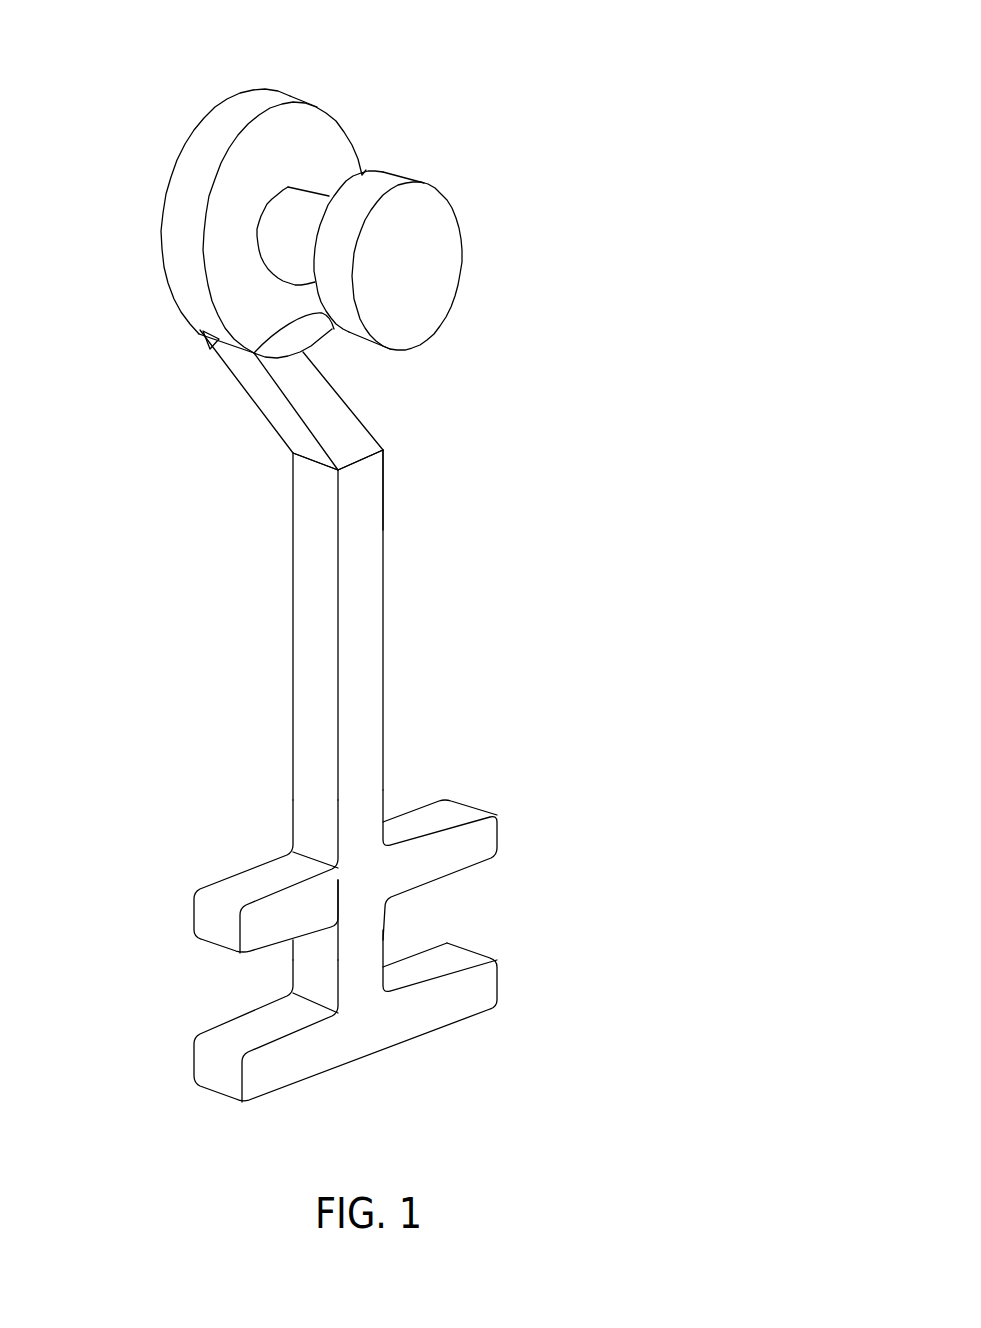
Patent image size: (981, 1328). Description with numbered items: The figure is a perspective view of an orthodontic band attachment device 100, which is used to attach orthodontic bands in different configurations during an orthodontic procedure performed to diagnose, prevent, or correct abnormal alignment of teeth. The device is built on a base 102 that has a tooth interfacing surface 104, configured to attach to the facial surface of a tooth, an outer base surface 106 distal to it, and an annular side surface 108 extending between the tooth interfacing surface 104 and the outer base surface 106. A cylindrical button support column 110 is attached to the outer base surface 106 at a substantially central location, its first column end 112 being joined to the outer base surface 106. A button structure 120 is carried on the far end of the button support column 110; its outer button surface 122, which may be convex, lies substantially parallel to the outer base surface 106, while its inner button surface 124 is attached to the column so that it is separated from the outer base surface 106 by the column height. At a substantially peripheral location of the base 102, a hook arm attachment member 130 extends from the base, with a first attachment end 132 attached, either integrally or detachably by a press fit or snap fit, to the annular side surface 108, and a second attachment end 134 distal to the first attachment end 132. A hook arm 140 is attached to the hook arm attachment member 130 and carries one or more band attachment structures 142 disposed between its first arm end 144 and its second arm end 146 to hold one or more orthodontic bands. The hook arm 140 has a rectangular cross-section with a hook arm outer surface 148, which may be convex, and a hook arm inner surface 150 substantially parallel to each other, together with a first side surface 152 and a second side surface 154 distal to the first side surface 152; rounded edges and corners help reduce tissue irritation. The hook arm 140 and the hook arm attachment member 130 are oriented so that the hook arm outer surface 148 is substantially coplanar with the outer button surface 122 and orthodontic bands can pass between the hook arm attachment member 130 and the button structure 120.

The orthodontic band attachment device 100 is at (577, 67).
The base 102 is at (244, 100).
The tooth interfacing surface 104 is at (211, 191).
The outer base surface 106 is at (288, 137).
The annular side surface 108 is at (215, 127).
The button support column 110 is at (235, 188).
The first column end 112 is at (265, 226).
The button structure 120 is at (421, 242).
The outer button surface 122 is at (441, 284).
The inner button surface 124 is at (250, 370).
The hook arm attachment member 130 is at (306, 391).
The first attachment end 132 is at (203, 334).
The second attachment end 134 is at (383, 450).
The hook arm 140 is at (410, 790).
The band attachment structures 142 is at (410, 960).
The first arm end 144 is at (306, 470).
The second arm end 146 is at (368, 1058).
The hook arm outer surface 148 is at (370, 662).
The hook arm inner surface 150 is at (294, 642).
The first side surface 152 is at (312, 743).
The second side surface 154 is at (386, 516).